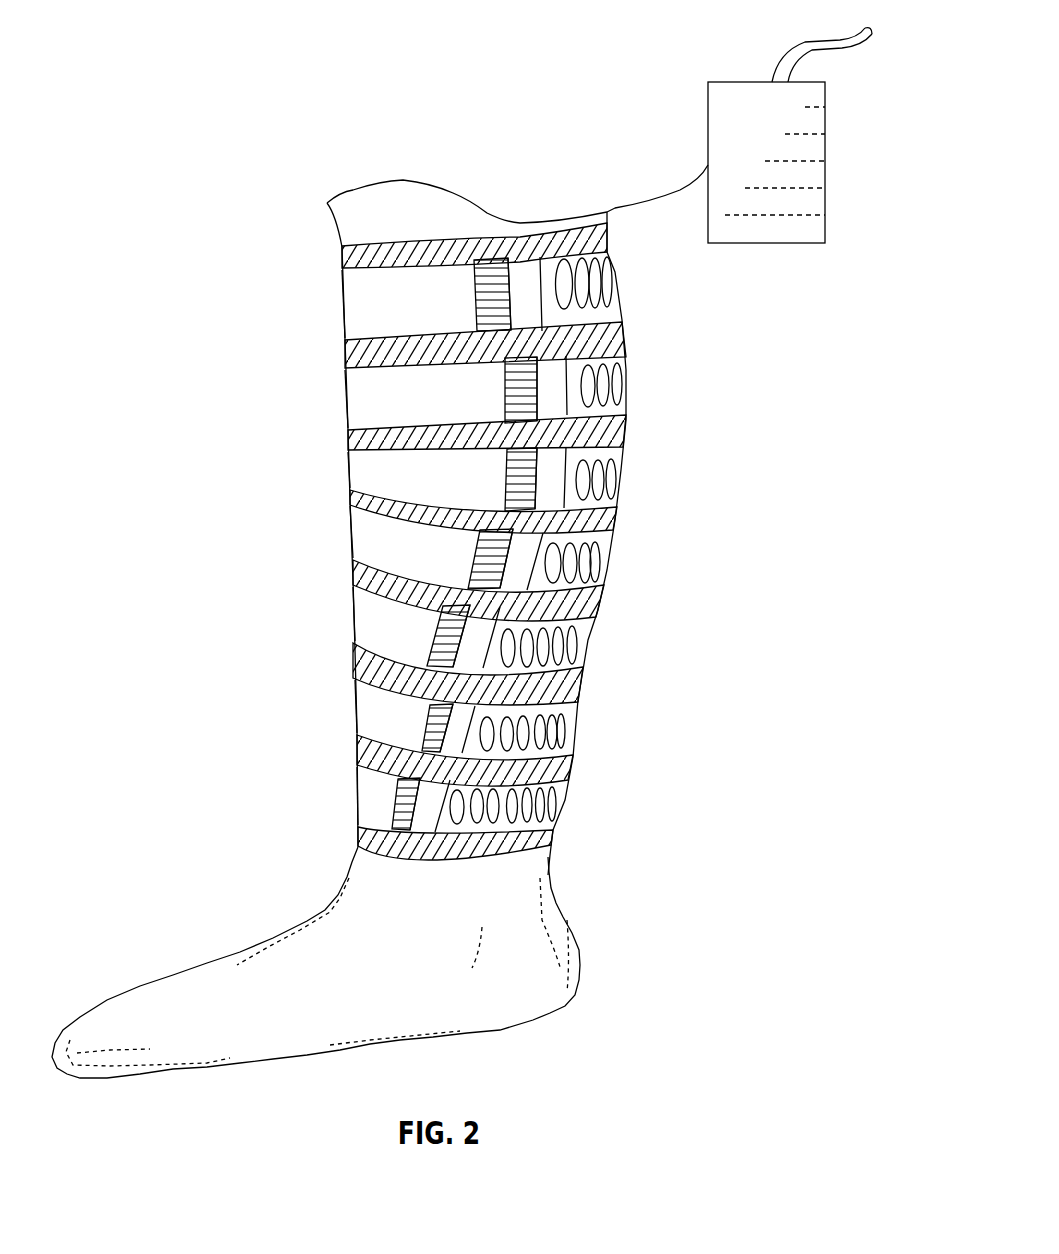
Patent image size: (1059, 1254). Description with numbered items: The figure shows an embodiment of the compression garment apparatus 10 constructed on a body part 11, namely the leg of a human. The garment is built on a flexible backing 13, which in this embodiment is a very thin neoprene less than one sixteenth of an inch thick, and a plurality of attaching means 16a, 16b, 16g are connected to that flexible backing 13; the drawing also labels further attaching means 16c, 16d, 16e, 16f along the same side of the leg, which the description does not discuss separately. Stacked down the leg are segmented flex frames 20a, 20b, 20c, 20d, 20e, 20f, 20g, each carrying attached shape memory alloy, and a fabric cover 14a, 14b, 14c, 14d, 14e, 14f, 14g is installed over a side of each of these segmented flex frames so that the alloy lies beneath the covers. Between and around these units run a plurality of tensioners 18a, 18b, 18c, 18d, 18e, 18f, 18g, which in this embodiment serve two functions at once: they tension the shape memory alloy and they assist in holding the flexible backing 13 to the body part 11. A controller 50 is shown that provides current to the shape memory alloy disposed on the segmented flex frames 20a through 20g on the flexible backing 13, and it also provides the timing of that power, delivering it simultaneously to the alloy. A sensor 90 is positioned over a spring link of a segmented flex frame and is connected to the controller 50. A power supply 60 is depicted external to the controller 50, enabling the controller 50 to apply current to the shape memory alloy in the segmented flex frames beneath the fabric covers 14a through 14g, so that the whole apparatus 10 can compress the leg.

The compression garment apparatus 10 is at (258, 172).
The body part 11 is at (495, 231).
The flexible backing 13 is at (392, 252).
The fabric cover 14a is at (367, 297).
The fabric cover 14b is at (370, 385).
The fabric cover 14c is at (372, 465).
The fabric cover 14d is at (372, 548).
The fabric cover 14e is at (372, 628).
The fabric cover 14f is at (375, 703).
The fabric cover 14g is at (377, 790).
The attaching means 16a is at (525, 313).
The attaching means 16b is at (565, 403).
The fastener strip 16c is at (550, 478).
The fastener strip 16d is at (521, 559).
The fastener strip 16e is at (476, 636).
The fastener strip 16f is at (457, 728).
The attaching means 16g is at (470, 808).
The tensioner 18a is at (493, 297).
The tensioner 18b is at (520, 387).
The tensioner 18c is at (522, 477).
The tensioner 18d is at (477, 567).
The tensioner 18e is at (448, 637).
The tensioner 18f is at (432, 724).
The tensioner 18g is at (398, 810).
The segmented flex frame 20a is at (620, 286).
The segmented flex frame 20b is at (630, 382).
The segmented flex frame 20c is at (624, 482).
The segmented flex frame 20d is at (605, 565).
The segmented flex frame 20e is at (588, 643).
The segmented flex frame 20f is at (574, 724).
The segmented flex frame 20g is at (558, 800).
The controller 50 is at (803, 203).
The power supply 60 is at (770, 78).
The sensor 90 is at (615, 277).